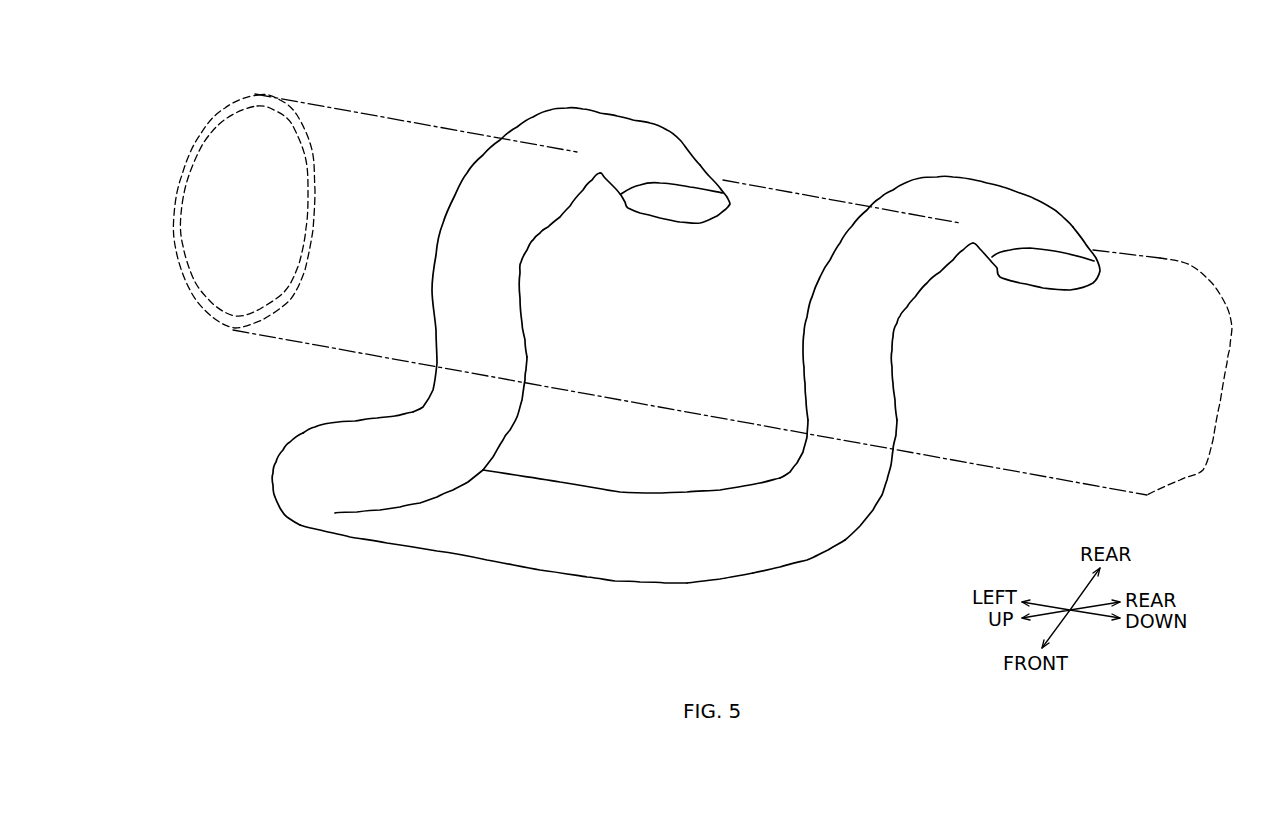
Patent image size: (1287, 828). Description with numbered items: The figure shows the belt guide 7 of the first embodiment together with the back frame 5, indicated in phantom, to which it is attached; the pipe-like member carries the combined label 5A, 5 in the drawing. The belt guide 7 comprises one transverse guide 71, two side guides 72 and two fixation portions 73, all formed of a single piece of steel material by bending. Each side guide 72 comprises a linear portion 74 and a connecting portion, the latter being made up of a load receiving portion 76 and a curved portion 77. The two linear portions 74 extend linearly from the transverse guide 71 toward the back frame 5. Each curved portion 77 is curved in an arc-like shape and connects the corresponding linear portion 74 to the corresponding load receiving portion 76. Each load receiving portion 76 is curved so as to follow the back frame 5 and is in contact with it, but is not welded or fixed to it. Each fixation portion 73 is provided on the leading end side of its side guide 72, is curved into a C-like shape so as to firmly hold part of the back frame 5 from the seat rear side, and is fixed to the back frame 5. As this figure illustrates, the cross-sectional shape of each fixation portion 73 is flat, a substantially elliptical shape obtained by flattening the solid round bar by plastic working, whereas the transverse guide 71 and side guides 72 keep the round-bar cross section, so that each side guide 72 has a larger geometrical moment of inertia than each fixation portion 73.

The back frame 5 is at (1162, 257).
The pipe body 5A is at (702, 294).
The belt guide 7 is at (663, 352).
The transverse guide 71 is at (536, 516).
The side guide 72 is at (305, 413).
The fixation portion 73 is at (627, 118).
The linear portion 74 is at (357, 430).
The load receiving portion 76 is at (505, 282).
The curved portion 77 is at (497, 415).